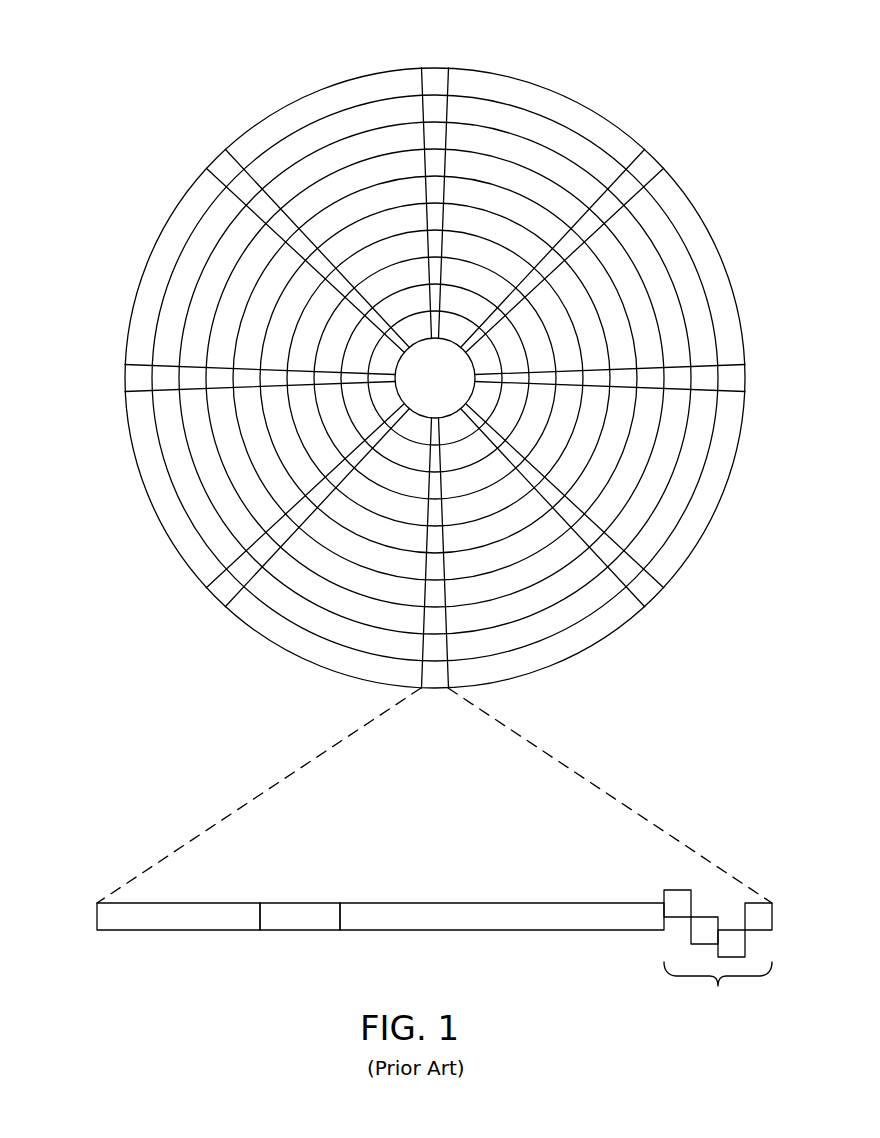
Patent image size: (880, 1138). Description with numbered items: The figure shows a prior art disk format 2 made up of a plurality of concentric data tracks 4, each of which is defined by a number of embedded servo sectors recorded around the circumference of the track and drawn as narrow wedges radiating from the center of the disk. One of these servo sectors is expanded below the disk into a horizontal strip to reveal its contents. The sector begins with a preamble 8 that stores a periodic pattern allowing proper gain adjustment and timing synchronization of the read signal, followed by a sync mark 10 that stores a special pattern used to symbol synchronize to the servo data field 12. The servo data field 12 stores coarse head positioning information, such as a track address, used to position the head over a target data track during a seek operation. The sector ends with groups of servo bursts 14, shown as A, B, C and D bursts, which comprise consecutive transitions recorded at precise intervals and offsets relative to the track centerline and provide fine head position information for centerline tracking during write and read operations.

The disk format 2 is at (208, 73).
The data track 4 is at (561, 112).
The preamble 8 is at (160, 930).
The sync mark 10 is at (297, 930).
The servo data field 12 is at (490, 930).
The servo bursts 14 is at (655, 873).